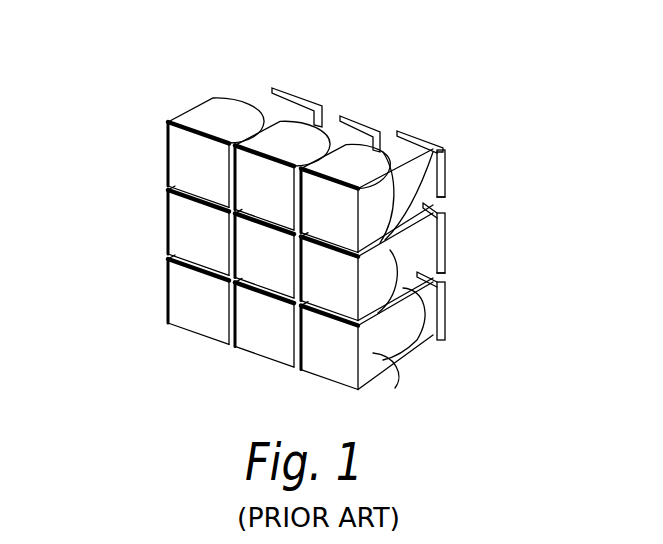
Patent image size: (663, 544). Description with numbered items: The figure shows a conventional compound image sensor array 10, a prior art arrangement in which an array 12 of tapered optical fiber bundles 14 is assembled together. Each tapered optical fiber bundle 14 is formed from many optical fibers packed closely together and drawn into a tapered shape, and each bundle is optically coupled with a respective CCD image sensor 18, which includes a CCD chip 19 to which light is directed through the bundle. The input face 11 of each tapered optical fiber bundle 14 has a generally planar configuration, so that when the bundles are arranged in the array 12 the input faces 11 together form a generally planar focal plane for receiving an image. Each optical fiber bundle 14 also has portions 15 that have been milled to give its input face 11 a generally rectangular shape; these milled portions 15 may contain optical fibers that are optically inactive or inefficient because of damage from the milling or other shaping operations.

The compound image sensor array 10 is at (305, 213).
The input face 11 is at (257, 252).
The array 12 is at (305, 213).
The tapered optical fiber bundle 14 is at (300, 105).
The milled portions 15 is at (278, 143).
The CCD image sensor 18 is at (447, 162).
The CCD chip 19 is at (440, 189).